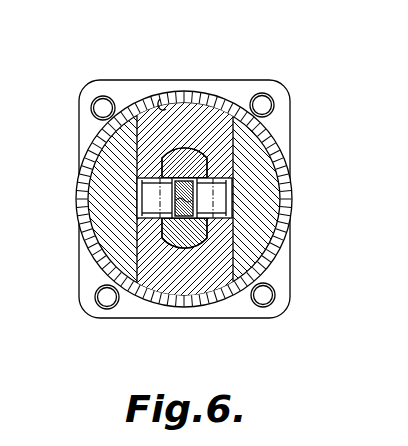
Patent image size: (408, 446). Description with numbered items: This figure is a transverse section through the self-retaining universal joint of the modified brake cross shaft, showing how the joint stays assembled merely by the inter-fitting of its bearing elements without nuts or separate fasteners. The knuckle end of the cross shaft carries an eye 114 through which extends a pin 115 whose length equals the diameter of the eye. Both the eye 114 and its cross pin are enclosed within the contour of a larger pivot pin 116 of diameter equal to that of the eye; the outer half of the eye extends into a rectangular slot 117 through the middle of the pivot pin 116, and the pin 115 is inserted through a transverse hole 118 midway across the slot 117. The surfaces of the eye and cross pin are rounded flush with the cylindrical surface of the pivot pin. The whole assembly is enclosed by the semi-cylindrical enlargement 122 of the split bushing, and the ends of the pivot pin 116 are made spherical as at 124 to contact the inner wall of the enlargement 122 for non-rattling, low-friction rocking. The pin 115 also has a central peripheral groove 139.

The eye 114 is at (135, 173).
The pin 115 is at (158, 196).
The pivot pin 116 is at (197, 93).
The rectangular slot 117 is at (200, 151).
The transverse hole 118 is at (233, 183).
The semi-cylindrical enlargement 122 is at (133, 104).
The spherical end 124 is at (162, 100).
The central peripheral groove 139 is at (232, 193).